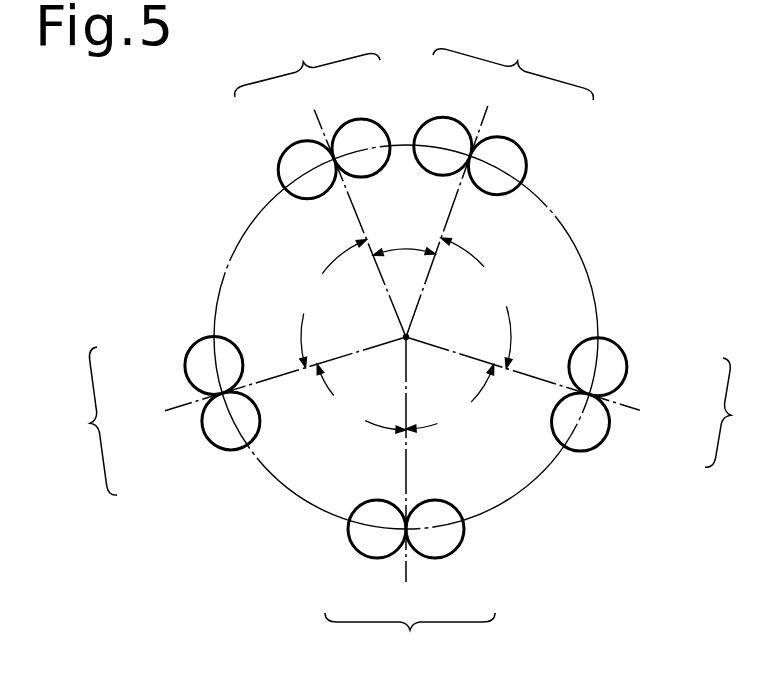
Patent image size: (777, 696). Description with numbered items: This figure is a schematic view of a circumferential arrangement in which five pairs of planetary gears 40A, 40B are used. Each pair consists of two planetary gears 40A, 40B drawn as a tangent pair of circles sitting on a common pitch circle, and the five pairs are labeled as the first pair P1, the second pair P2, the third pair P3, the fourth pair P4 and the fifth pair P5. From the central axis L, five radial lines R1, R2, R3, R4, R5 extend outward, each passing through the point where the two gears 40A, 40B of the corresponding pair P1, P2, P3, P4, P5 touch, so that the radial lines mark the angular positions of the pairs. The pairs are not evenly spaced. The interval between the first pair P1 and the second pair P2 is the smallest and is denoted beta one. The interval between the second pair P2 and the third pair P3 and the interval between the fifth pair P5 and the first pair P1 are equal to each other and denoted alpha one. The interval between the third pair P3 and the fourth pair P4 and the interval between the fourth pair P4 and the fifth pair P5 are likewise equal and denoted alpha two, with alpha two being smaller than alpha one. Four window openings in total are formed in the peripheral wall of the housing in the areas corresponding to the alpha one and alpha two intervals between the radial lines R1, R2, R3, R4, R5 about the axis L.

The planetary gear 40A is at (287, 149).
The planetary gear 40B is at (358, 119).
The first pair P1 is at (307, 63).
The second pair P2 is at (513, 64).
The third pair P3 is at (737, 412).
The fourth pair P4 is at (410, 641).
The fifth pair P5 is at (81, 421).
The first radial line R1 is at (352, 209).
The second radial line R2 is at (456, 206).
The third radial line R3 is at (528, 374).
The fourth radial line R4 is at (408, 463).
The fifth radial line R5 is at (266, 378).
The central axis L is at (408, 335).